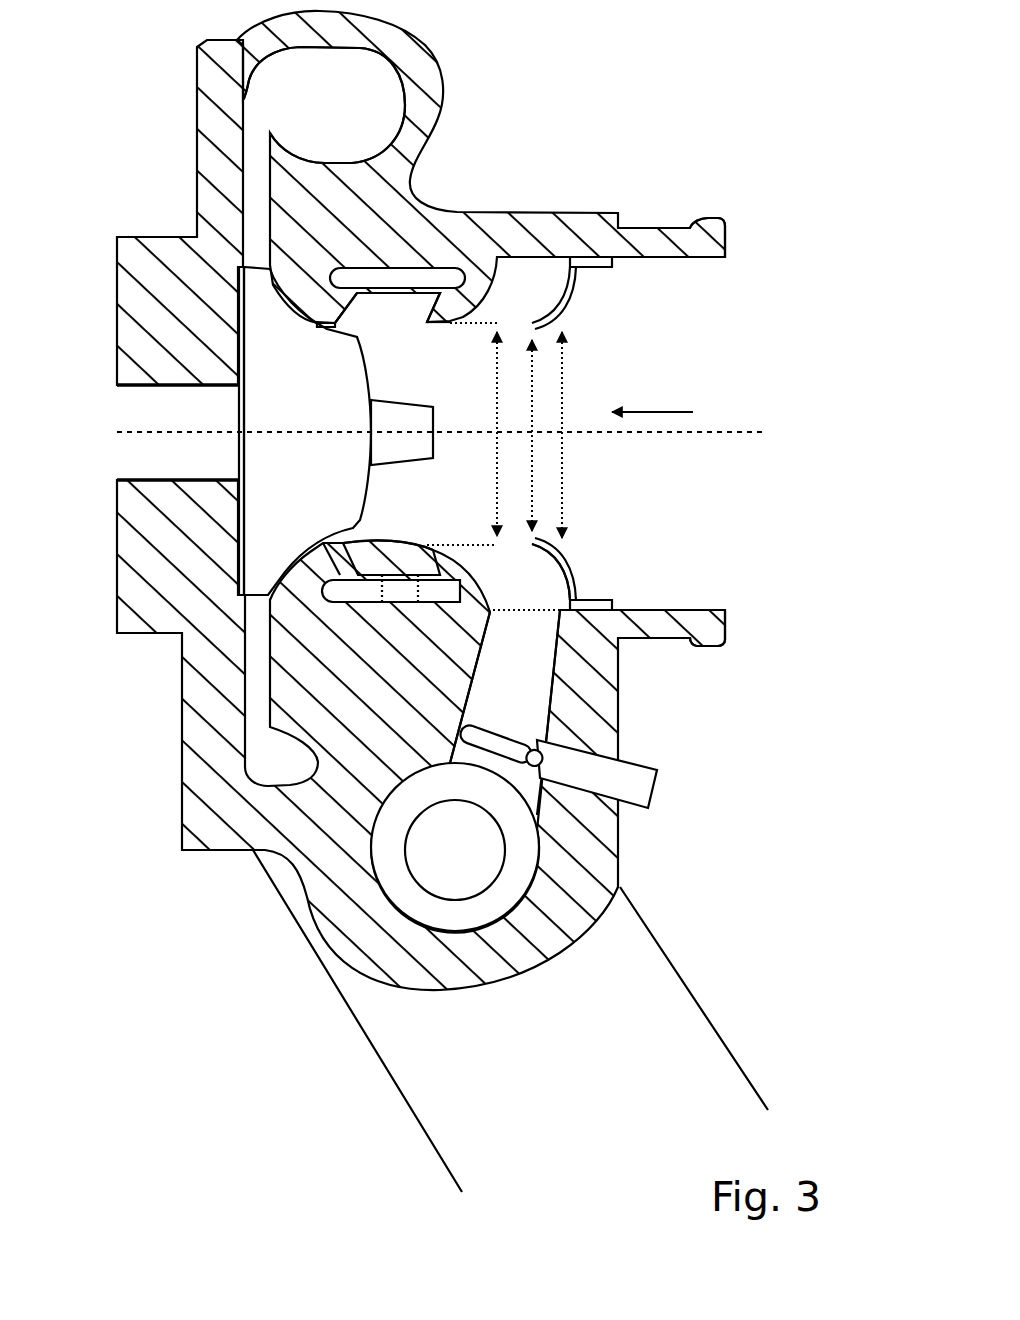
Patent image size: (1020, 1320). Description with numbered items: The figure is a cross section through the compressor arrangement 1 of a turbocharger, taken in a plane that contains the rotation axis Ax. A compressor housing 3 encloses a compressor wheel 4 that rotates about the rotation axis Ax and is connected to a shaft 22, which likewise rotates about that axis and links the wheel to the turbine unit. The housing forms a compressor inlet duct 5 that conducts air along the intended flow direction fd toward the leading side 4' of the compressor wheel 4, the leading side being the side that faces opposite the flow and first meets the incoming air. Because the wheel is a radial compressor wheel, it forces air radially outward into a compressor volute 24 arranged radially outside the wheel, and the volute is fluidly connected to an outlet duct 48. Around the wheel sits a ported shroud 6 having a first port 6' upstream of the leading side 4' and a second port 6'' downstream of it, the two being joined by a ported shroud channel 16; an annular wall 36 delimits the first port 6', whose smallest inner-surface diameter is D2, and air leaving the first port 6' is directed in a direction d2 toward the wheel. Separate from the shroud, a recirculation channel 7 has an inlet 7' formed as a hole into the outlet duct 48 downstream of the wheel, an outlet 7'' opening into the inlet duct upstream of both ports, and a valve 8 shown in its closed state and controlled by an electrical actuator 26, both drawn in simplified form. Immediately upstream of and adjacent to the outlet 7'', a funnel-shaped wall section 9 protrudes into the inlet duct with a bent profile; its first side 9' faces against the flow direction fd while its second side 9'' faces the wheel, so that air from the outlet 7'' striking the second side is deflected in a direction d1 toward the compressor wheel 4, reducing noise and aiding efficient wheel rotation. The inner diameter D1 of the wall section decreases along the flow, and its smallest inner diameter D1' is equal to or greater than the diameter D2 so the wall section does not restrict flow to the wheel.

The compressor arrangement 1 is at (621, 95).
The compressor housing 3 is at (540, 222).
The compressor wheel 4 is at (319, 431).
The leading side 4' is at (410, 417).
The compressor inlet duct 5 is at (725, 262).
The ported shroud 6 is at (407, 335).
The first port 6' is at (416, 344).
The second port 6'' is at (323, 348).
The recirculation channel 7 is at (421, 735).
The inlet 7' is at (525, 847).
The outlet 7'' is at (561, 712).
The valve 8 is at (499, 738).
The wall section 9 is at (569, 562).
The first side 9' is at (599, 587).
The second side 9'' is at (547, 575).
The ported shroud channel 16 is at (400, 283).
The shaft 22 is at (138, 406).
The compressor volute 24 is at (378, 88).
The electrical actuator 26 is at (630, 778).
The wall 36 is at (458, 318).
The outlet duct 48 is at (405, 1068).
The rotation axis Ax is at (444, 412).
The inner diameter D1 is at (590, 435).
The smallest inner diameter D1' is at (577, 435).
The smallest diameter D2 is at (497, 470).
The direction d1 is at (527, 562).
The direction d2 is at (410, 543).
The intended flow direction fd is at (653, 412).